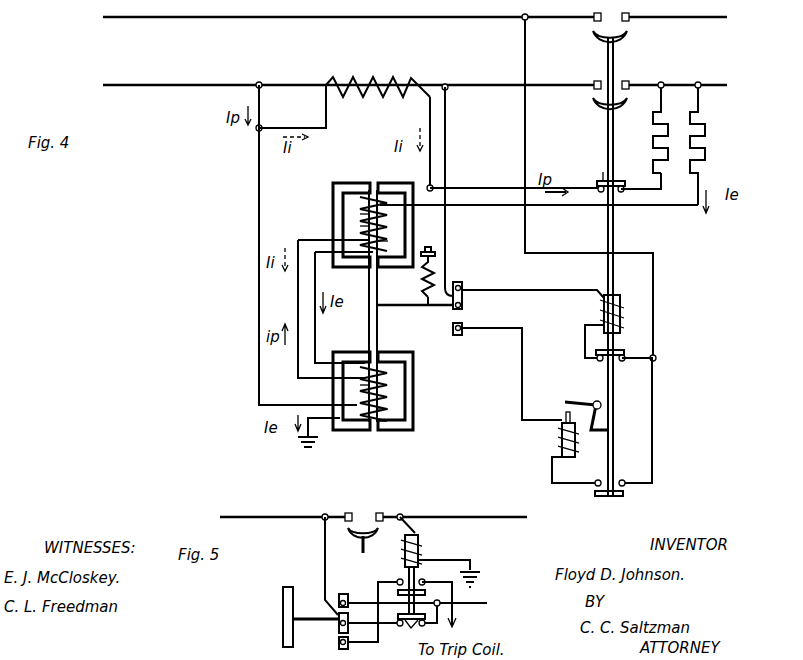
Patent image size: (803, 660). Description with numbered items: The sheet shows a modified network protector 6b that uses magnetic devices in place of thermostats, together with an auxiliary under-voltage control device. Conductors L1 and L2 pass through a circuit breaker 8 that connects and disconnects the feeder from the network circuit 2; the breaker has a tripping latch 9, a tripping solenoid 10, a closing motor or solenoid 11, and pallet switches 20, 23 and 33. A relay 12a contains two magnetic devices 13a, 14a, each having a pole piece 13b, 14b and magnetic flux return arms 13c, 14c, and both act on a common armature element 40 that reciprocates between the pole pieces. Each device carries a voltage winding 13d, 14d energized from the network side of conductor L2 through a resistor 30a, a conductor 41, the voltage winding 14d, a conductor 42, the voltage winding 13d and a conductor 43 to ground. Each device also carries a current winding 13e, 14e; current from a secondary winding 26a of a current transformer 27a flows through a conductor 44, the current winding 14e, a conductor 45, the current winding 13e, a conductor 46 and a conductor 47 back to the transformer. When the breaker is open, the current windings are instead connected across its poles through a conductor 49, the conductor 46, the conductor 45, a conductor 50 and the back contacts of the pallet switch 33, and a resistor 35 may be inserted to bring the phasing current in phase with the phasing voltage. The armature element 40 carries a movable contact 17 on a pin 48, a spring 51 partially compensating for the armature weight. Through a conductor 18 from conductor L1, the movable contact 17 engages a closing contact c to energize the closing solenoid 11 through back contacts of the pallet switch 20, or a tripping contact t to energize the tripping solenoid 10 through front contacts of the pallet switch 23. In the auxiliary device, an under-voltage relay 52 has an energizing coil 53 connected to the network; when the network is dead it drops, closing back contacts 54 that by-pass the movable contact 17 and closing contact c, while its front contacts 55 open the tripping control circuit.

In FIG. 4, the conductor L1 is at (415, 10).
In FIG. 4, the conductor L2 is at (415, 77).
In FIG. 5, the conductor L2 is at (373, 509).
In FIG. 4, the network circuit 2 is at (713, 22).
In FIG. 5, the network circuit 2 is at (491, 506).
In FIG. 4, the circuit breaker 8 is at (616, 242).
In FIG. 5, the circuit breaker 8 is at (356, 543).
In FIG. 4, the conductor 49 is at (265, 98).
In FIG. 4, the conductor 47 is at (292, 106).
In FIG. 4, the current transformer 27a is at (378, 73).
In FIG. 4, the secondary winding 26a is at (439, 75).
In FIG. 4, the conductor 44 is at (436, 128).
In FIG. 4, the conductor 18 is at (448, 160).
In FIG. 5, the conductor 18 is at (323, 572).
In FIG. 4, the modified protector 6b is at (558, 138).
In FIG. 4, the conductor 50 is at (514, 178).
In FIG. 4, the pallet switch 33 is at (619, 176).
In FIG. 4, the resistor 35 is at (653, 140).
In FIG. 4, the resistor 30a is at (706, 138).
In FIG. 4, the conductor 41 is at (668, 207).
In FIG. 4, the conductor 46 is at (257, 213).
In FIG. 4, the conductor 45 is at (298, 303).
In FIG. 4, the conductor 42 is at (316, 333).
In FIG. 4, the relay 12a is at (365, 176).
In FIG. 4, the magnetic device 13a is at (415, 405).
In FIG. 4, the armature element 40 is at (380, 333).
In FIG. 4, the magnetic device 14a is at (440, 221).
In FIG. 4, the pole piece 14b is at (378, 202).
In FIG. 4, the magnetic flux return arm 14c is at (345, 213).
In FIG. 4, the current winding 14e is at (362, 220).
In FIG. 4, the voltage winding 14d is at (390, 242).
In FIG. 4, the magnetic flux return arm 13c is at (412, 372).
In FIG. 4, the current winding 13e is at (372, 397).
In FIG. 4, the voltage winding 13d is at (385, 413).
In FIG. 4, the pole piece 13b is at (382, 428).
In FIG. 4, the conductor 43 is at (318, 425).
In FIG. 4, the movable contact 17 is at (465, 307).
In FIG. 5, the movable contact 17 is at (338, 628).
In FIG. 4, the closing contact c is at (466, 287).
In FIG. 5, the closing contact c is at (349, 604).
In FIG. 4, the tripping contact t is at (452, 327).
In FIG. 5, the tripping contact t is at (350, 646).
In FIG. 4, the pin 48 is at (415, 291).
In FIG. 4, the spring 51 is at (440, 290).
In FIG. 4, the closing motor or solenoid 11 is at (622, 318).
In FIG. 4, the pallet switch 20 is at (626, 354).
In FIG. 4, the tripping latch 9 is at (577, 401).
In FIG. 4, the tripping solenoid 10 is at (561, 437).
In FIG. 4, the pallet switch 23 is at (617, 497).
In FIG. 5, the energizing coil 53 is at (420, 546).
In FIG. 5, the under-voltage relay 52 is at (420, 561).
In FIG. 5, the front contacts 55 is at (425, 585).
In FIG. 5, the back contacts 54 is at (404, 635).